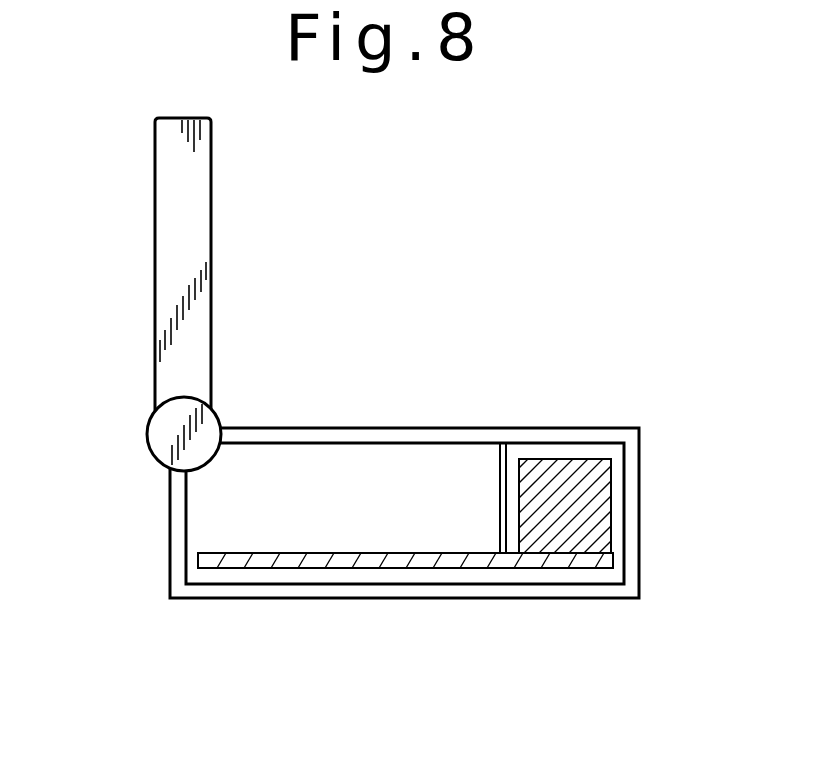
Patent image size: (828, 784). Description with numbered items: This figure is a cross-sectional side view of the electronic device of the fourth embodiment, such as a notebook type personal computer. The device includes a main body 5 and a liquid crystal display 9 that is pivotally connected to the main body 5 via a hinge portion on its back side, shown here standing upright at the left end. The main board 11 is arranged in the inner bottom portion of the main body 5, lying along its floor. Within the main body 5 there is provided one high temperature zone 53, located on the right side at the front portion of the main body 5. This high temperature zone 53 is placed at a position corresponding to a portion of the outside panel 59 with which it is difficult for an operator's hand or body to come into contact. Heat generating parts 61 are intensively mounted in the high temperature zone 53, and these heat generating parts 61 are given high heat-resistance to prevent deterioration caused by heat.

The main body 5 is at (343, 427).
The liquid crystal display 9 is at (195, 206).
The main board 11 is at (325, 551).
The high temperature zone 53 is at (569, 448).
The outside panel 59 is at (155, 278).
The heat generating parts 61 is at (590, 495).